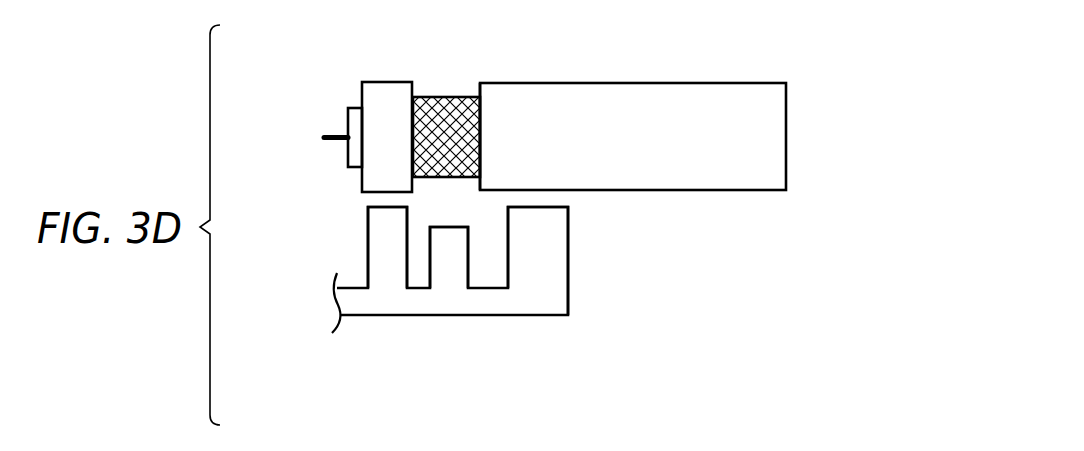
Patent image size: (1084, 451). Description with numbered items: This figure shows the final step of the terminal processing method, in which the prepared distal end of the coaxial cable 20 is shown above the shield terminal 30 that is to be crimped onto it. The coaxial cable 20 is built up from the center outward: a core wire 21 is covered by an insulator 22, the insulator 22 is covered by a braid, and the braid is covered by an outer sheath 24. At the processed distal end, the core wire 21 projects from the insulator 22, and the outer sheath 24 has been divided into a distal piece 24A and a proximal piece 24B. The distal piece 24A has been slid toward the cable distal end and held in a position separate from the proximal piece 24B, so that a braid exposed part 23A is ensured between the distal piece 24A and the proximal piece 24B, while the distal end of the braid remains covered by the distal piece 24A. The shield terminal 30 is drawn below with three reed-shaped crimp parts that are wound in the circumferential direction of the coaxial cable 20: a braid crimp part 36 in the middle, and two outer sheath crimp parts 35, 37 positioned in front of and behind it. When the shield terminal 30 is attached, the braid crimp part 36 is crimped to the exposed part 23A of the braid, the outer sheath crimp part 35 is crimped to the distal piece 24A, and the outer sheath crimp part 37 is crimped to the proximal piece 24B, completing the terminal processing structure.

The coaxial cable 20 is at (537, 102).
The core wire 21 is at (327, 132).
The insulator 22 is at (351, 108).
The exposed part of the braid 23A is at (450, 94).
The outer sheath 24 is at (653, 102).
The distal piece of the outer sheath 24A is at (385, 82).
The proximal piece of the outer sheath 24B is at (508, 90).
The shield terminal 30 is at (469, 306).
The outer sheath crimp part 35 is at (377, 227).
The braid crimp part 36 is at (447, 238).
The outer sheath crimp part 37 is at (552, 225).